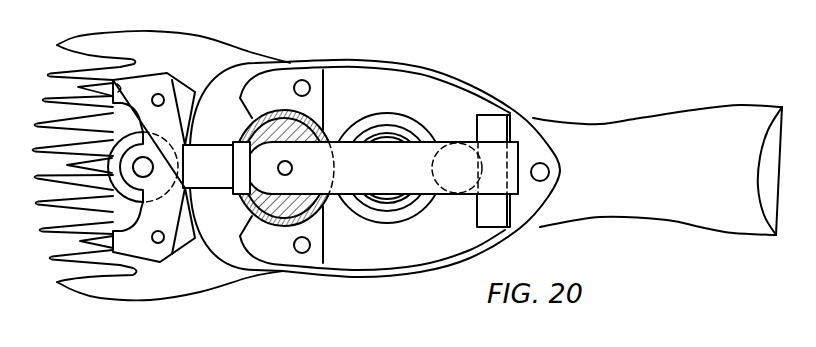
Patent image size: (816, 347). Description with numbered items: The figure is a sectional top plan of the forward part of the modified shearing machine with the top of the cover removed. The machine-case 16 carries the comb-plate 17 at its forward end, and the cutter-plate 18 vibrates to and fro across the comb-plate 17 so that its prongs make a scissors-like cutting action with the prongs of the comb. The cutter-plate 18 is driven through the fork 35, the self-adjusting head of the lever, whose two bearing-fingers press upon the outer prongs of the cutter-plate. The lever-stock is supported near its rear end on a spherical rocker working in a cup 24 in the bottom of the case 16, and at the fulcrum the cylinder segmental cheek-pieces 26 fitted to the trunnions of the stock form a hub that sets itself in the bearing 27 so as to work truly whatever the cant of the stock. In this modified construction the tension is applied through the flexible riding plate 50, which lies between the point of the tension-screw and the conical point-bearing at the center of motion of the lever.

The machine-case 16 is at (422, 71).
The comb-plate 17 is at (182, 293).
The cutter-plate 18 is at (172, 84).
The cup 24 is at (388, 208).
The cylinder segmental cheek-pieces 26 is at (324, 122).
The bearing 27 is at (300, 112).
The fork 35 is at (208, 166).
The riding plate 50 is at (382, 168).